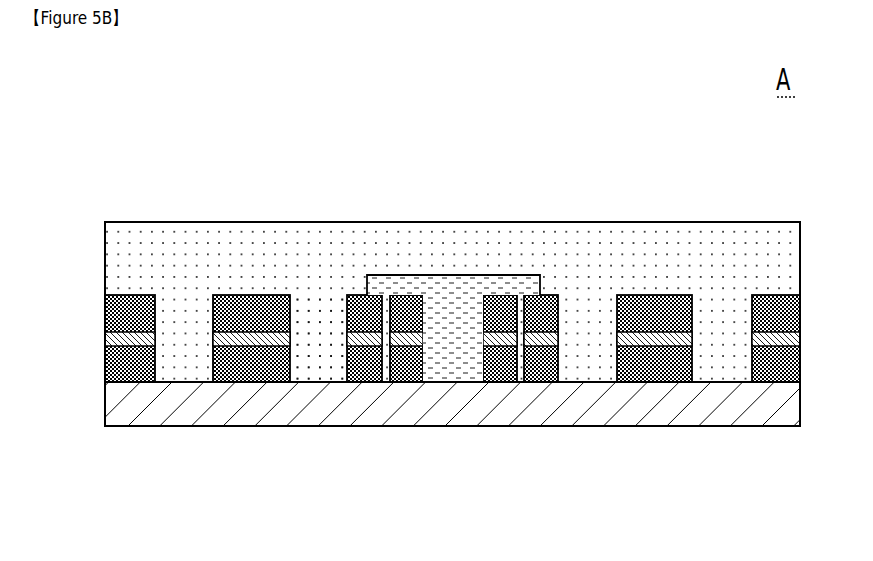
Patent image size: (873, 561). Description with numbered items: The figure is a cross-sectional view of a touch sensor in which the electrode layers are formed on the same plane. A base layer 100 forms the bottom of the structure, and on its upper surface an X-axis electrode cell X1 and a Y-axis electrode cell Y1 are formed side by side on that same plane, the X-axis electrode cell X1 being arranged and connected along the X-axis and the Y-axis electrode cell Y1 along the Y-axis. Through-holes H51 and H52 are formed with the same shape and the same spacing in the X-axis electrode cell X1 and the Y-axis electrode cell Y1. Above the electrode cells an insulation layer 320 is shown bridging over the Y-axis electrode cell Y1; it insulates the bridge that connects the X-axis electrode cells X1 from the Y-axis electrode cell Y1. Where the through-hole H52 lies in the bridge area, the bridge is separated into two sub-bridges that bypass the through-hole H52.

The base layer 100 is at (270, 426).
The insulation layer 320 is at (405, 273).
The through-hole H51 is at (317, 345).
The through-hole H52 is at (456, 345).
The Y-axis electrode cell Y1 is at (498, 372).
The X-axis electrode cell X1 is at (657, 373).